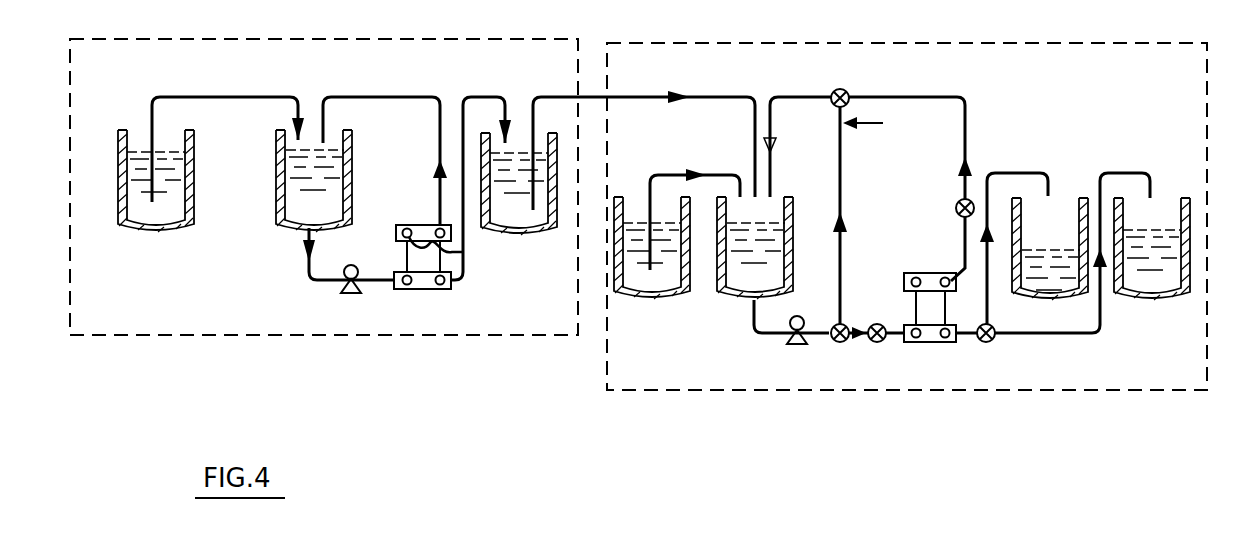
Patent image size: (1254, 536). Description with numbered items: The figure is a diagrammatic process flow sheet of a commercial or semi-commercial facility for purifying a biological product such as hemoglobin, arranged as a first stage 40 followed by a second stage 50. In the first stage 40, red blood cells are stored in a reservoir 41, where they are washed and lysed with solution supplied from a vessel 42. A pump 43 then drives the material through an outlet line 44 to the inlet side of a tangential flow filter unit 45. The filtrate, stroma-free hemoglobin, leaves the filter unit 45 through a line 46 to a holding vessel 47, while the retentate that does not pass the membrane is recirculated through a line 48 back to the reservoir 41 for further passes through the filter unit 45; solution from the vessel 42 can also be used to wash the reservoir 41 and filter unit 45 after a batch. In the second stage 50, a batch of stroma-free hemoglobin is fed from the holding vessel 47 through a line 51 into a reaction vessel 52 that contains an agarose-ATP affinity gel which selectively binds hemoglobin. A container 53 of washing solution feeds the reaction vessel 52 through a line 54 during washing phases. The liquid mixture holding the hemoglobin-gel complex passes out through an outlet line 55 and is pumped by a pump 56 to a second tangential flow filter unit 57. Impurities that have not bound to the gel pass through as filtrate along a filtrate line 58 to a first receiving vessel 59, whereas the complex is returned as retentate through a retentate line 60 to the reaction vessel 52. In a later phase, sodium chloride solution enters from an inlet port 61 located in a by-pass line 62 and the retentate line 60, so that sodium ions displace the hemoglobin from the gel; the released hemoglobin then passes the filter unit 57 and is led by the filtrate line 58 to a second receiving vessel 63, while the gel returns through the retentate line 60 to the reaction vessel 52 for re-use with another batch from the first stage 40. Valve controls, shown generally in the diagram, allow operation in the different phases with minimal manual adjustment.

The first stage 40 is at (141, 357).
The reservoir 41 is at (278, 232).
The vessel 42 is at (155, 232).
The pump 43 is at (345, 291).
The outlet line 44 is at (308, 270).
The tangential flow filter unit 45 is at (432, 289).
The line 46 is at (473, 97).
The holding vessel 47 is at (510, 229).
The line 48 is at (398, 97).
The second stage 50 is at (882, 401).
The line 51 is at (650, 95).
The reaction vessel 52 is at (733, 302).
The container 53 is at (648, 302).
The line 54 is at (650, 175).
The outlet line 55 is at (754, 334).
The pump 56 is at (804, 345).
The tangential flow filter unit 57 is at (935, 343).
The filtrate line 58 is at (975, 340).
The first receiving vessel 59 is at (1046, 303).
The retentate line 60 is at (897, 97).
The inlet port 61 is at (858, 128).
The by-pass line 62 is at (843, 197).
The second receiving vessel 63 is at (1148, 303).